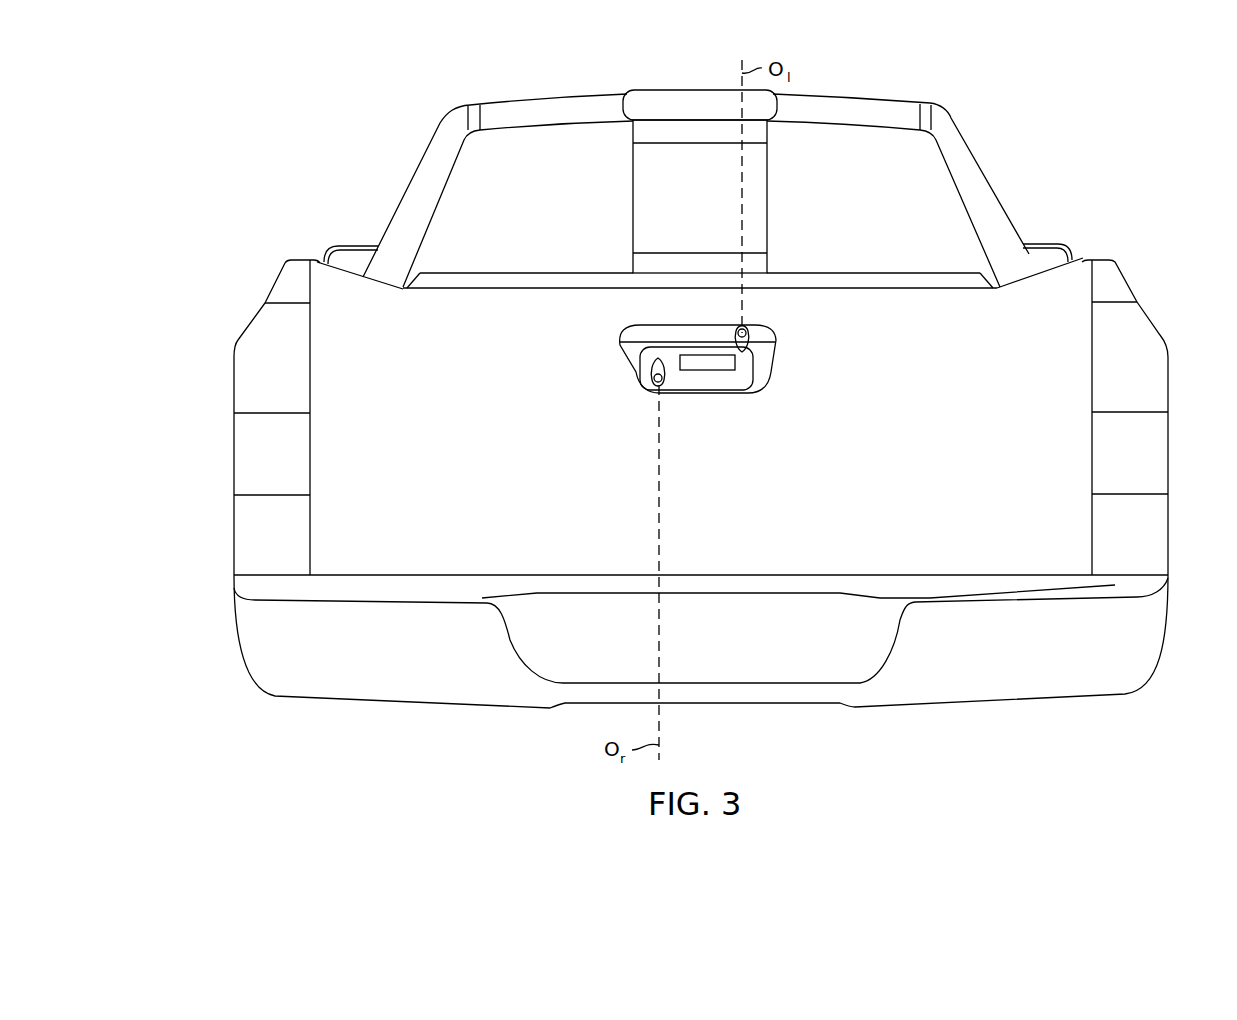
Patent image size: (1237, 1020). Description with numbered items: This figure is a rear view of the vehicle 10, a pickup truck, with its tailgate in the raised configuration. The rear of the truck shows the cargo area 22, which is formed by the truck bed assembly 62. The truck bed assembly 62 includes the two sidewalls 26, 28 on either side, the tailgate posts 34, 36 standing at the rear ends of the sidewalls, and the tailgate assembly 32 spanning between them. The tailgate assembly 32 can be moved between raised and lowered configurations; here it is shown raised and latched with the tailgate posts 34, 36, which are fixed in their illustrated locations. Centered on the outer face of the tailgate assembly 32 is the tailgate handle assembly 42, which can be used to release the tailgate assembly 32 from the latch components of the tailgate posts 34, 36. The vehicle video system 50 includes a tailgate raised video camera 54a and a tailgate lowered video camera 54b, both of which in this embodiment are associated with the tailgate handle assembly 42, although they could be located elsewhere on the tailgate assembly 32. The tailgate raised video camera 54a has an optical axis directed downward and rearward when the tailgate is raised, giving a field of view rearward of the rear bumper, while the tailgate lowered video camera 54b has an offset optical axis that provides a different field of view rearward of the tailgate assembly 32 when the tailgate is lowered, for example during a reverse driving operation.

The vehicle 10 is at (1105, 190).
The cargo area 22 is at (930, 165).
The sidewall 26 is at (233, 452).
The sidewall 28 is at (1170, 452).
The tailgate assembly 32 is at (347, 517).
The tailgate post 34 is at (242, 381).
The tailgate post 36 is at (1160, 381).
The tailgate handle assembly 42 is at (807, 348).
The vehicle video system 50 is at (612, 270).
The tailgate raised video camera 54a is at (648, 378).
The tailgate lowered video camera 54b is at (747, 343).
The truck bed assembly 62 is at (302, 192).